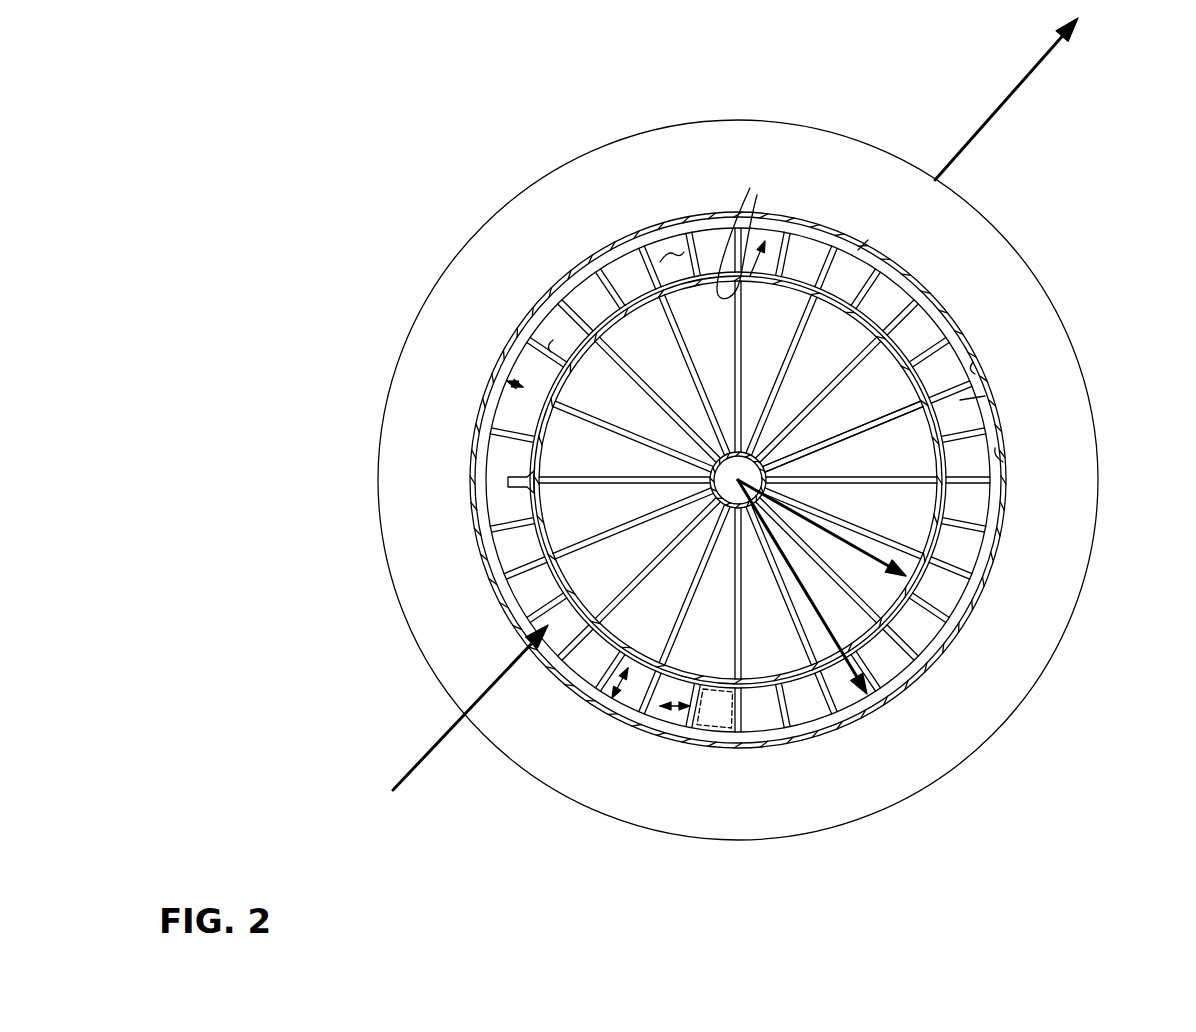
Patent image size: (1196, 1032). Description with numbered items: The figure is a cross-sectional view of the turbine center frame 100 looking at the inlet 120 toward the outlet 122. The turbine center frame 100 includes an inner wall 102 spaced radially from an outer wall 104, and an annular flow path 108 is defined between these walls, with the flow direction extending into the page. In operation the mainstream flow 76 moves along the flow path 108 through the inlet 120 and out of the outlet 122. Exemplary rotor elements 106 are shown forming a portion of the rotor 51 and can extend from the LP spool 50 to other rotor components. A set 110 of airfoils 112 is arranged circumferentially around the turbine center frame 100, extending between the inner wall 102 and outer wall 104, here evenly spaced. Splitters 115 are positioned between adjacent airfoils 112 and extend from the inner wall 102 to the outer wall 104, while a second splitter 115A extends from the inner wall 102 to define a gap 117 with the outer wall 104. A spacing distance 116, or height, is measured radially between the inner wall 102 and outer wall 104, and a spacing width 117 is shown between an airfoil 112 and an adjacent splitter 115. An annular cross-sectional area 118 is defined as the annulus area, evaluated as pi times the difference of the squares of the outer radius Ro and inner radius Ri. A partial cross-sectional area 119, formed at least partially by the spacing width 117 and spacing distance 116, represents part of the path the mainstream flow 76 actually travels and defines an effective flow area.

The outlet 122 is at (652, 125).
The annular cross-sectional area 118 is at (672, 250).
The outer wall 104 is at (566, 273).
The annular flow path 108 is at (747, 231).
The inlet 120 is at (866, 243).
The rotor elements 106 is at (932, 285).
The airfoils 112 is at (563, 312).
The splitter 115 is at (553, 340).
The second splitter 115A is at (535, 388).
The spacing width 117 is at (505, 393).
The inner wall 102 is at (605, 327).
The rotor 51 is at (822, 438).
The LP spool 50 is at (766, 470).
The inner radius Ri is at (800, 516).
The outer radius Ro is at (790, 568).
The set of airfoils 110 is at (973, 395).
The turbine center frame 100 is at (948, 652).
The mainstream flow 76 is at (398, 787).
The spacing distance 116 is at (627, 688).
The partial cross-sectional area 119 is at (690, 745).